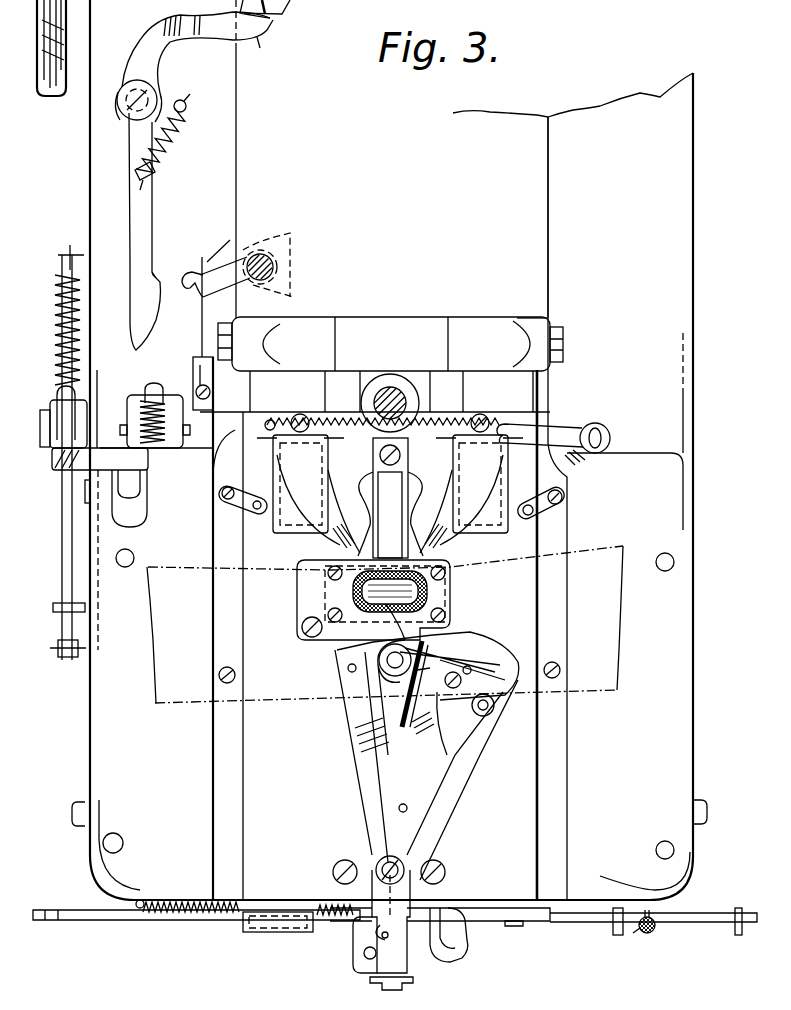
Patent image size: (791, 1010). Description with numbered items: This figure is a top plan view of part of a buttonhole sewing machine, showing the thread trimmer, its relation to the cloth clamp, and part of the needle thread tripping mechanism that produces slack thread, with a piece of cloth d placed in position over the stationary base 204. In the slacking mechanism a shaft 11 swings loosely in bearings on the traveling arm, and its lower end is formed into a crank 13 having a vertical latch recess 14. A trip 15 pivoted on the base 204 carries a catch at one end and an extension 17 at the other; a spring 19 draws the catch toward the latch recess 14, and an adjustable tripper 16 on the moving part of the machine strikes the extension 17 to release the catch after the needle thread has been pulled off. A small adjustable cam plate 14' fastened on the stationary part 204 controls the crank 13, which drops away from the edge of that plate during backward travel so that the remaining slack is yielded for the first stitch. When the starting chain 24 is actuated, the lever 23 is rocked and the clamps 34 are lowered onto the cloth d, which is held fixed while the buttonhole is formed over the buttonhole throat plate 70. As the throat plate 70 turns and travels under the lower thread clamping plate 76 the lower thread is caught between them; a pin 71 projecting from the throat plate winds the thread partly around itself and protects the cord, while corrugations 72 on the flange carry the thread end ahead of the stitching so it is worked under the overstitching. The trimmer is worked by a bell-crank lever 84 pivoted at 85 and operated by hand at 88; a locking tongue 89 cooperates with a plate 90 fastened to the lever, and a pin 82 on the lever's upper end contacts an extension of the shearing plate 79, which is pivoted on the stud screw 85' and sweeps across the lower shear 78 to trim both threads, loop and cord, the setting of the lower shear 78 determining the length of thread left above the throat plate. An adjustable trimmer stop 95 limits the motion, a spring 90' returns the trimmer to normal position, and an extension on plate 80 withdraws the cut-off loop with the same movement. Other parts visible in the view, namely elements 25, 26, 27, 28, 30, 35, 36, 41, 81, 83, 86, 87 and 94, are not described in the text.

The shaft 11 is at (263, 252).
The crank 13 is at (203, 260).
The latch recess 14 is at (162, 305).
The cam plate 14' is at (188, 369).
The trip 15 is at (135, 212).
The tripper 16 is at (278, 18).
The extension 17 is at (268, 50).
The spring 19 is at (163, 150).
The lever 23 is at (62, 562).
The starting chain 24 is at (60, 657).
The collar 25 is at (55, 615).
The compression spring and bracket 26 is at (40, 410).
The cross bar 27 is at (58, 468).
The spring housing lever 28 is at (138, 515).
The shaft 30 is at (396, 396).
The clamps 34 is at (390, 483).
The end block 35 is at (390, 344).
The center block 36 is at (375, 364).
The coil spring 41 is at (318, 418).
The buttonhole throat plate 70 is at (390, 695).
The pin 71 is at (388, 674).
The corrugations 72 is at (432, 711).
The lower thread clamping plate 76 is at (332, 638).
The lower shear 78 is at (368, 773).
The shearing plate 79 is at (420, 730).
The plate 80 is at (458, 762).
The frame plate 81 is at (478, 652).
The pin 82 is at (370, 960).
The vertical bar 83 is at (400, 970).
The bell-crank lever 84 is at (125, 920).
The pivot 85 is at (403, 992).
The stud screw 85' is at (364, 858).
The nut 86 is at (653, 933).
The bracket 87 is at (620, 936).
The manual operating means 88 is at (745, 935).
The locking tongue 89 is at (277, 926).
The plate 90 is at (262, 941).
The spring 90' is at (187, 930).
The horizontal bar 94 is at (535, 921).
The trimmer stop 95 is at (465, 950).
The base 204 is at (573, 195).
The cloth d is at (587, 632).